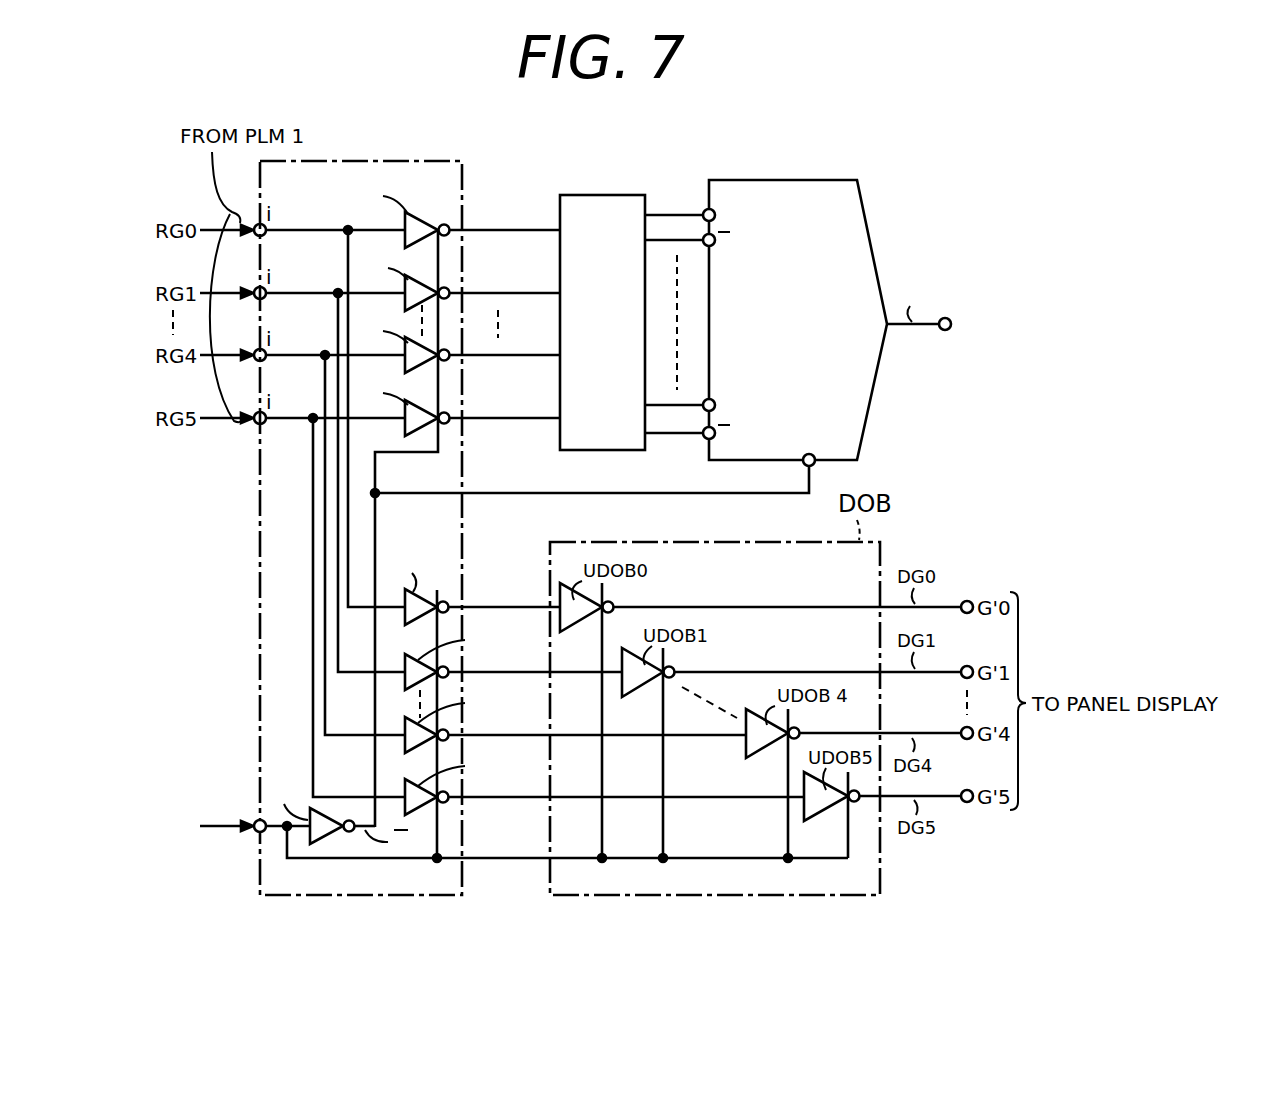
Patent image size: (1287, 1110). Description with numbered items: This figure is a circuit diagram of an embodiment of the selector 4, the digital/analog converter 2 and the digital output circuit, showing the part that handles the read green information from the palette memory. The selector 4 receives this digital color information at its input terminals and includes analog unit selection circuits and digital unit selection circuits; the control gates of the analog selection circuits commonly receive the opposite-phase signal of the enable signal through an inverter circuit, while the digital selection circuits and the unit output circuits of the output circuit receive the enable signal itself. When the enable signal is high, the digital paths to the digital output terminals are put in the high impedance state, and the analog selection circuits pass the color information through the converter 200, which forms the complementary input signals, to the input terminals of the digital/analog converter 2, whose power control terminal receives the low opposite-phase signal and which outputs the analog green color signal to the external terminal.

The selector 4 is at (441, 160).
The converter 200 is at (634, 194).
The digital/analog converter 2 is at (878, 323).